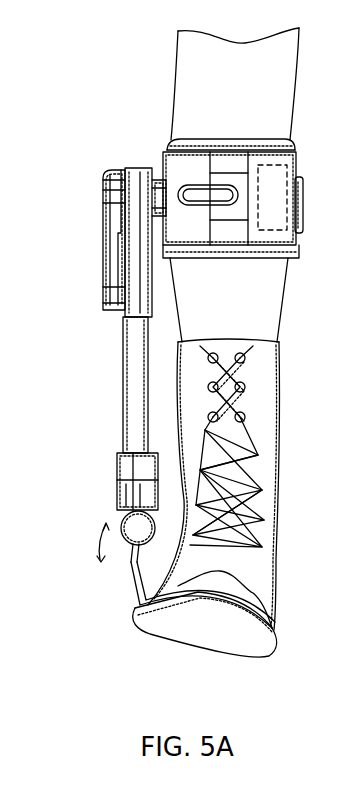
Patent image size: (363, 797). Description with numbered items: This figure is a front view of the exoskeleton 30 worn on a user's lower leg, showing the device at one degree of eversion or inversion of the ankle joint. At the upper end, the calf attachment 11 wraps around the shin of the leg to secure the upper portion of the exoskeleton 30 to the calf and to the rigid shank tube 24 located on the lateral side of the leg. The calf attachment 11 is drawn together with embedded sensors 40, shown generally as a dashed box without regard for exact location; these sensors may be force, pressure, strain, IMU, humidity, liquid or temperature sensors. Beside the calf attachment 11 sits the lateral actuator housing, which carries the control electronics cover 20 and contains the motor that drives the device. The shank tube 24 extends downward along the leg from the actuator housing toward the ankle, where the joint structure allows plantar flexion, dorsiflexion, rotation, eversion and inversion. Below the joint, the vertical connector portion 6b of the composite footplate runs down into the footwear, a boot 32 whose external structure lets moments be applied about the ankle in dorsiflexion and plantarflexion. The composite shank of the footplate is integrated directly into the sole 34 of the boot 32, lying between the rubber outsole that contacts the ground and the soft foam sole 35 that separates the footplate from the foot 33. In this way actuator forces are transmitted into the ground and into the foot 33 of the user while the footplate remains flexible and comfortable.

The calf attachment 11 is at (301, 200).
The embedded sensors 40 is at (286, 164).
The control electronics cover 20 is at (105, 217).
The shank tube 24 is at (128, 362).
The exoskeleton 30 is at (108, 396).
The vertical connector portion 6b is at (132, 583).
The boot 32 is at (276, 512).
The foot 33 is at (262, 592).
The soft foam sole 35 is at (270, 625).
The sole 34 is at (268, 655).